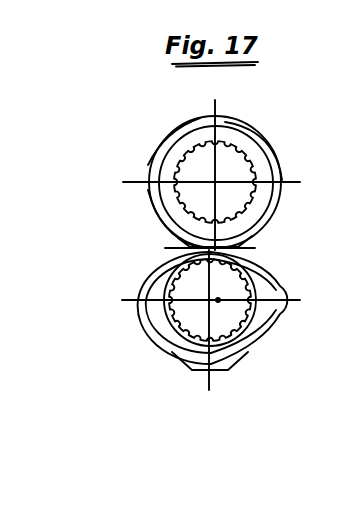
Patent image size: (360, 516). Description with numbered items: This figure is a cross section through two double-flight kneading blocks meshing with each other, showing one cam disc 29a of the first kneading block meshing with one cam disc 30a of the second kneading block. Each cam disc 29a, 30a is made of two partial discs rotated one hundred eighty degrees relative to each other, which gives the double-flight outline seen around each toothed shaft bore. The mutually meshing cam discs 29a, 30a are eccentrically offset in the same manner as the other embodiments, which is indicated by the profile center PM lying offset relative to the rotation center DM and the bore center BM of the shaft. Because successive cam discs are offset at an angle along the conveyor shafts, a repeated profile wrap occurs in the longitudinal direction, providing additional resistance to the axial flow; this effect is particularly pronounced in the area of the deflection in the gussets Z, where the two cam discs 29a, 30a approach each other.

The cam disc 29a is at (225, 107).
The cam disc 30a is at (297, 317).
The gusset Z is at (175, 248).
The profile center PM is at (218, 300).
The rotation center DM is at (158, 360).
The bore center BM is at (218, 300).